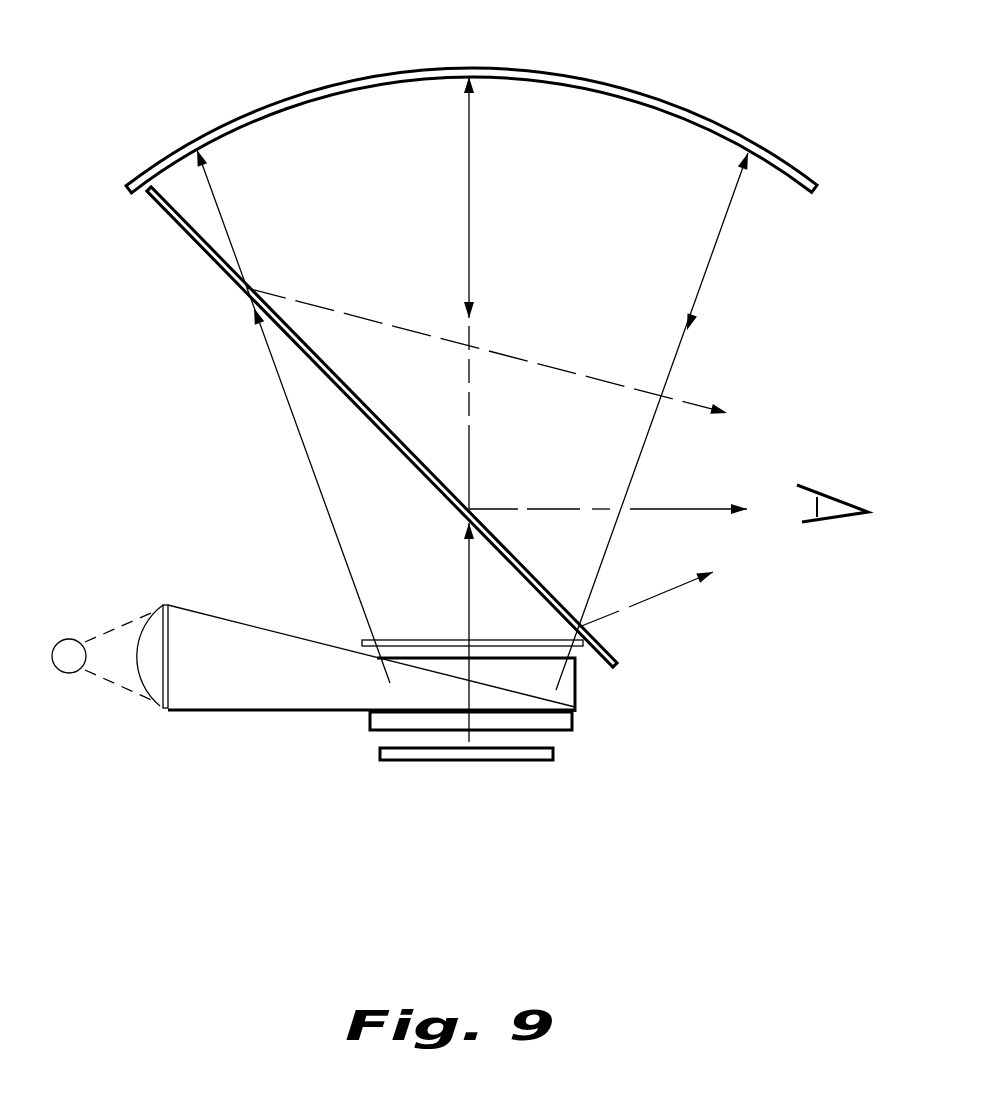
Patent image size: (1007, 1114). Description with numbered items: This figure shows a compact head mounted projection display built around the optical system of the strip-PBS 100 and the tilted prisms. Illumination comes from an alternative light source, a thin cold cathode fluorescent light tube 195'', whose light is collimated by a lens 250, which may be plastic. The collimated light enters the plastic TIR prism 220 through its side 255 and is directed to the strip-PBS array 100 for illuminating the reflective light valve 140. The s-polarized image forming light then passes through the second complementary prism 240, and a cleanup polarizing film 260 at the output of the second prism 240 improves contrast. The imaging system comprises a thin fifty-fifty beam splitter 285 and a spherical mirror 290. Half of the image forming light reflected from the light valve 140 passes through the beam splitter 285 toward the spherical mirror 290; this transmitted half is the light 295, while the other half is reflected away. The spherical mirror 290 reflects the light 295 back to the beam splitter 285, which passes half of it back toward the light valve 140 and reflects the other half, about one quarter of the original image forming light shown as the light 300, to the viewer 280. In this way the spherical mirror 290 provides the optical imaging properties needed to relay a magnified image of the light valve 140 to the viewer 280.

The spherical mirror 290 is at (352, 74).
The 50/50 beam splitter 285 is at (178, 228).
The 50% image forming light 295 is at (473, 174).
The 25% image forming light 300 is at (548, 507).
The viewer 280 is at (836, 470).
The cold cathode fluorescent light tube 195'' is at (103, 619).
The side of TIR prism 255 is at (170, 653).
The lens 250 is at (152, 692).
The TIR prism 220 is at (258, 720).
The second complementary prism 240 is at (568, 690).
The cleanup polarizing film 260 is at (410, 640).
The strip-PBS array 100 is at (568, 718).
The reflective light valve 140 is at (556, 754).